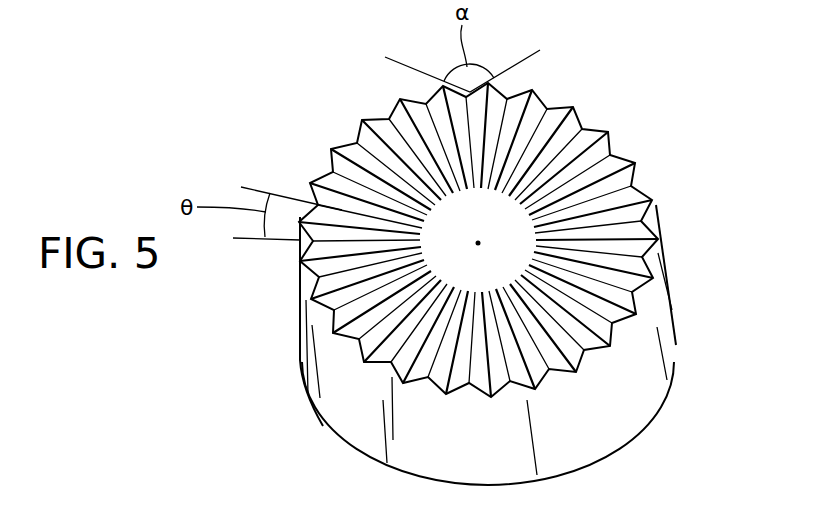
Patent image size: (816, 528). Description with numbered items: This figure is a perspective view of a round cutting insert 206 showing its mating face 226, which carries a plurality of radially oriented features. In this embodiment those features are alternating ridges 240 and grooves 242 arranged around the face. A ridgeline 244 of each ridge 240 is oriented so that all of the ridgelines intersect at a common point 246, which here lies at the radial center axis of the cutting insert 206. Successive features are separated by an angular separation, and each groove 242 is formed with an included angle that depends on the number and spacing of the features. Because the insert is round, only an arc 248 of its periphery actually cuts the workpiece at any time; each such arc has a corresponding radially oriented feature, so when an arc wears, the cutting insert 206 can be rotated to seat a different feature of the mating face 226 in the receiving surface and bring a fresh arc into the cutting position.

The cutting insert 206 is at (336, 88).
The mating face 226 is at (349, 188).
The ridge 240 is at (370, 297).
The groove 242 is at (376, 352).
The ridgeline 244 is at (348, 301).
The common point 246 is at (478, 243).
The arc 248 is at (634, 430).